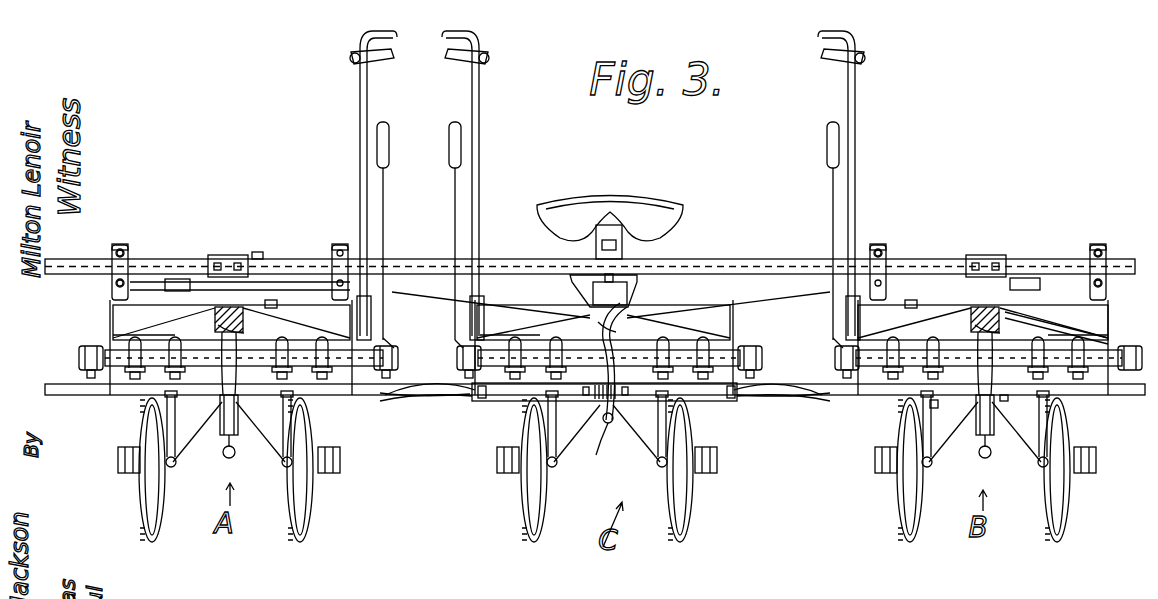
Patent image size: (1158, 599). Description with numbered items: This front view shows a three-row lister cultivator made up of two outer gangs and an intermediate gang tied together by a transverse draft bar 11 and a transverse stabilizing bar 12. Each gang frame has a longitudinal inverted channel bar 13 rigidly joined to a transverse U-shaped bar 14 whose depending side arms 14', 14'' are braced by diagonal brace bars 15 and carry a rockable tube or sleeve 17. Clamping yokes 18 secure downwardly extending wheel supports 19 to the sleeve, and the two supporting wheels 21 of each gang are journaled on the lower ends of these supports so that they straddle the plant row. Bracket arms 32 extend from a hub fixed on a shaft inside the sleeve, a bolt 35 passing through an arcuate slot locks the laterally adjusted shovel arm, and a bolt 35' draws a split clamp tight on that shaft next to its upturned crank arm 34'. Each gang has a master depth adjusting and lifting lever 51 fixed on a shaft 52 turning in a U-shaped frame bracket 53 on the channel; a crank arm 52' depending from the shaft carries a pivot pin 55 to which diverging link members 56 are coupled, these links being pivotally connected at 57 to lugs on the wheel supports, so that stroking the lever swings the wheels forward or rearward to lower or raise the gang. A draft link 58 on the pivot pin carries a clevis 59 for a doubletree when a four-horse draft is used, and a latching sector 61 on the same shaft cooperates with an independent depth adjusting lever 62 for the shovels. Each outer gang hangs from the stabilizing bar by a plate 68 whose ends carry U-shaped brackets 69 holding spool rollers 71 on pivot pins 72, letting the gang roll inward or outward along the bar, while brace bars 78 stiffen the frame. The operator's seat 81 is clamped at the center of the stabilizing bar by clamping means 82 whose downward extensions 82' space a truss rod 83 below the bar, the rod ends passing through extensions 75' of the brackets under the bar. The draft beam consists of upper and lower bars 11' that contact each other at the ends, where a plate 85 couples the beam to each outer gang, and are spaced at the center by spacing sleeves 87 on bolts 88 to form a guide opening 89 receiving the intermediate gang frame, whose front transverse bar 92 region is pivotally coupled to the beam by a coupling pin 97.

The draft bar 11 is at (592, 416).
The upper and lower bars 11' is at (605, 402).
The stabilizing bar 12 is at (418, 262).
The inverted channel bar 13 is at (1048, 248).
The U-shaped bar 14 is at (608, 338).
The depending side arm 14' is at (611, 354).
The depending side arm 14'' is at (610, 367).
The diagonal brace bars 15 is at (84, 340).
The sleeve 17 is at (600, 400).
The clamping yokes 18 is at (1084, 432).
The wheel supports 19 is at (922, 418).
The supporting wheels 21 is at (150, 506).
The bracket arms 32 is at (80, 360).
The crank arm 34' is at (613, 330).
The bolt 35 is at (616, 395).
The bolt 35' is at (439, 379).
The master depth adjusting and lifting lever 51 is at (358, 150).
The shaft 52 is at (607, 347).
The crank arm 52' is at (622, 336).
The U-shaped frame bracket 53 is at (278, 300).
The pivot pin 55 is at (1011, 383).
The link members 56 is at (186, 462).
The pivotal connection 57 is at (160, 462).
The draft link 58 is at (596, 429).
The clevis 59 is at (602, 464).
The latching sector 61 is at (378, 265).
The independent depth adjusting lever 62 is at (384, 210).
The plate 68 is at (1046, 290).
The U-shaped brackets 69 is at (1128, 250).
The rollers 71 is at (116, 248).
The pivot pins 72 is at (112, 247).
The downwardly projecting extensions 75' is at (619, 277).
The brace bars 78 is at (212, 258).
The operator's seat 81 is at (608, 197).
The clamping means 82 is at (592, 244).
The downwardly projecting extensions 82' is at (606, 290).
The truss rod 83 is at (700, 300).
The plate 85 is at (258, 252).
The spacing sleeves 87 is at (440, 396).
The bolts 88 is at (478, 402).
The guide opening 89 is at (482, 400).
The transverse bar 92 is at (615, 434).
The coupling pin 97 is at (605, 455).